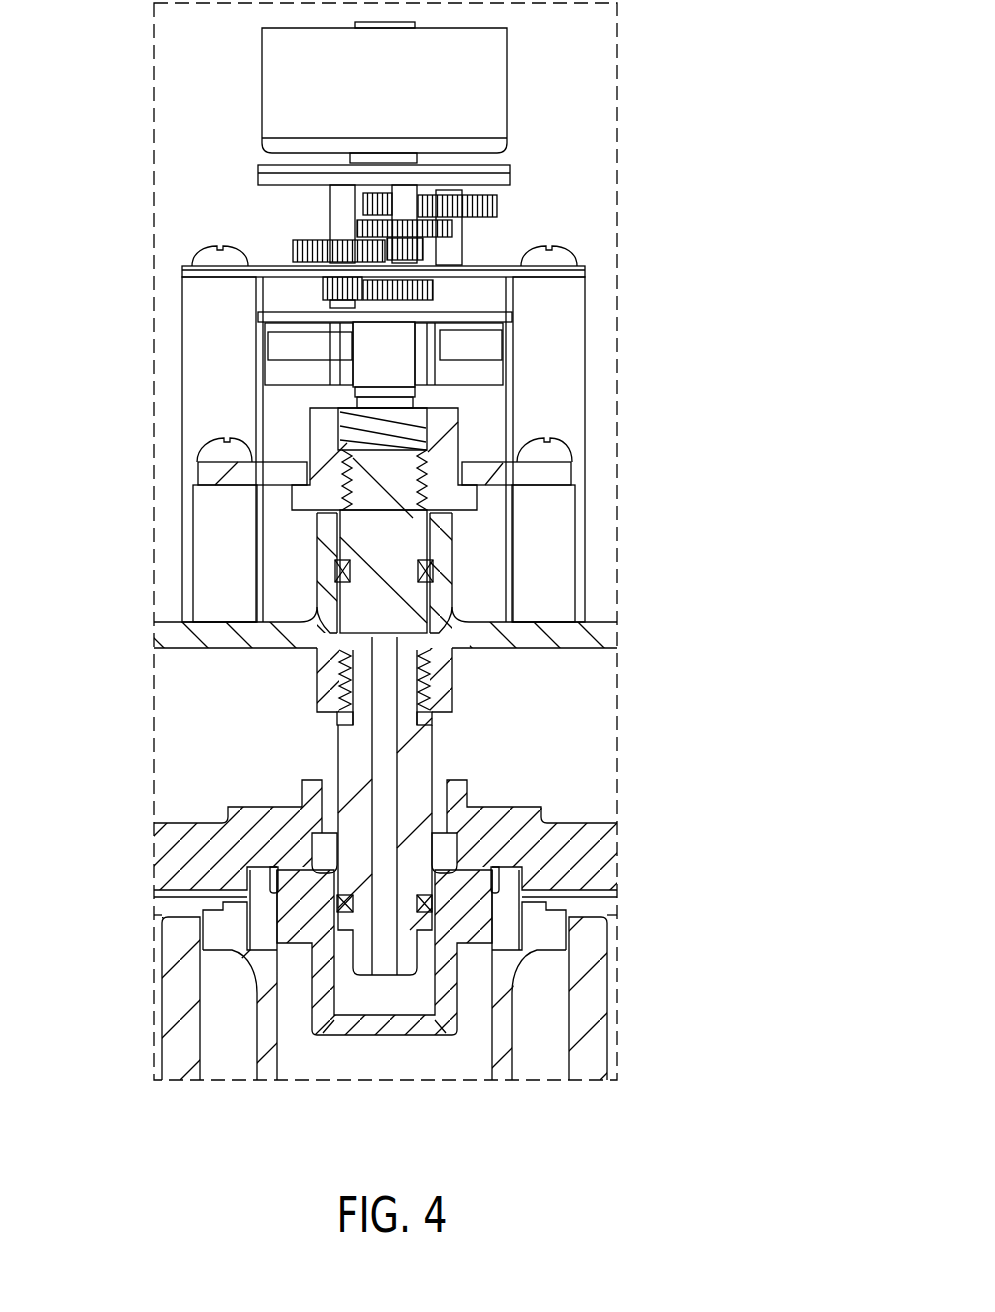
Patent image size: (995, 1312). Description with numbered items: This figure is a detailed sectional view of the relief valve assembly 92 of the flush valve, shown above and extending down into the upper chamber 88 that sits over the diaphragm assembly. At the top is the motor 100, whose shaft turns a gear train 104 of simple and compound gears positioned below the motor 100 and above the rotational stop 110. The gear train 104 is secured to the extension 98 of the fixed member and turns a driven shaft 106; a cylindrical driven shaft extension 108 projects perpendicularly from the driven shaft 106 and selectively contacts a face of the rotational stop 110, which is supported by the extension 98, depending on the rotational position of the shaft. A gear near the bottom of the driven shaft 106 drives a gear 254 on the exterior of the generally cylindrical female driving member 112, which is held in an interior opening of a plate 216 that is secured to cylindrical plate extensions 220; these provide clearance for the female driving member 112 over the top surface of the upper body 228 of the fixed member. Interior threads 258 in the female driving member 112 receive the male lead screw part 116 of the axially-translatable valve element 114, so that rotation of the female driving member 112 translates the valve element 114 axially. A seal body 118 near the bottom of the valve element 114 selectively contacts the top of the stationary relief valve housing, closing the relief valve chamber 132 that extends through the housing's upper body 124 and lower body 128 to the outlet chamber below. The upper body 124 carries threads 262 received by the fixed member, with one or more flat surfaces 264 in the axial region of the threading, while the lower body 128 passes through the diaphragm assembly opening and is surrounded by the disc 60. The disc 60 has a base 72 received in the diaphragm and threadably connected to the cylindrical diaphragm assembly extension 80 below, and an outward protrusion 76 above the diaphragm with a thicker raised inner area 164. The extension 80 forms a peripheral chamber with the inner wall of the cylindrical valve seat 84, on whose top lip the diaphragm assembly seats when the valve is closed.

The motor 100 is at (415, 98).
The gear train 104 is at (552, 216).
The extension 98 is at (236, 371).
The driven shaft extension 108 is at (280, 343).
The rotational stop 110 is at (480, 348).
The driven shaft 106 is at (392, 363).
The interior threads 258 is at (355, 432).
The plate 216 is at (213, 477).
The gear 254 is at (475, 495).
The relief valve assembly 92 is at (446, 488).
The female driving member 112 is at (320, 498).
The male lead screw part 116 is at (382, 470).
The axially-translatable valve element 114 is at (388, 556).
The plate extensions 220 is at (248, 592).
The upper body 228 is at (585, 640).
The seal body 118 is at (340, 652).
The threads 262 is at (337, 668).
The upper body 124 is at (402, 698).
The flat surfaces 264 is at (337, 717).
The lower body 128 is at (423, 767).
The upper chamber 88 is at (580, 703).
The raised inner area 164 is at (540, 815).
The disc 60 is at (605, 846).
The outward protrusion 76 is at (160, 848).
The base 72 is at (303, 907).
The valve seat 84 is at (177, 1070).
The diaphragm assembly extension 80 is at (268, 1073).
The relief valve chamber 132 is at (382, 970).